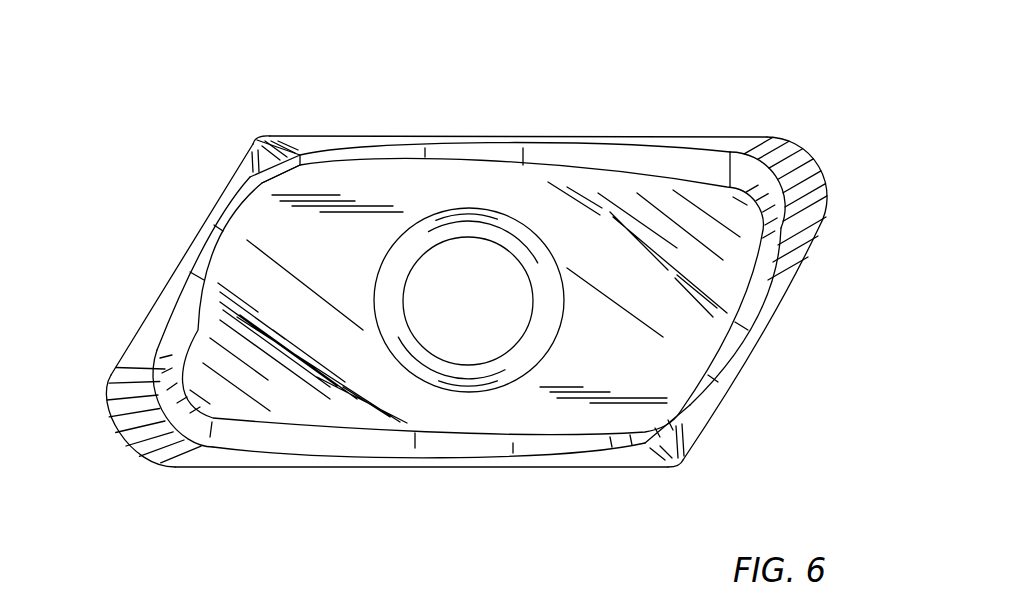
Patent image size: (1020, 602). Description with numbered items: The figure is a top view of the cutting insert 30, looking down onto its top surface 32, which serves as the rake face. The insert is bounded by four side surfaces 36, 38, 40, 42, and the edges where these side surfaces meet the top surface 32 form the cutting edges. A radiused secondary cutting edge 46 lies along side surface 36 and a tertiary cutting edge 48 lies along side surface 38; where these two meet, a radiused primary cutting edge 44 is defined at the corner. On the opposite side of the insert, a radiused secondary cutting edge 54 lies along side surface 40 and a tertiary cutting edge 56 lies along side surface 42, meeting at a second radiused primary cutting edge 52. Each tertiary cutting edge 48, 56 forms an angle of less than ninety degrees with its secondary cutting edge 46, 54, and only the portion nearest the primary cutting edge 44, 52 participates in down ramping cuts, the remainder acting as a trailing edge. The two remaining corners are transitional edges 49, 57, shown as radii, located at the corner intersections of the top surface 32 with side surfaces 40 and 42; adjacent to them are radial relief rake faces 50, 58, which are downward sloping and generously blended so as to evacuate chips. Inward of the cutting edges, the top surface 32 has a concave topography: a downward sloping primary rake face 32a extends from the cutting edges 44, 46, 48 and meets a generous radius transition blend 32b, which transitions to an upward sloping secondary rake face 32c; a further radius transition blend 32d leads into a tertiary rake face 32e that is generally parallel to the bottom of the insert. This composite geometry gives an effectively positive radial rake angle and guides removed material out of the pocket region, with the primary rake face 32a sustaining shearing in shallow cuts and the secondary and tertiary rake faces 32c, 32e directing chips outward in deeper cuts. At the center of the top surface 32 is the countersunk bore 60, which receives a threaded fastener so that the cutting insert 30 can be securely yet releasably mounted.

The cutting insert 30 is at (803, 108).
The top surface 32 is at (418, 183).
The primary rake face 32a is at (174, 292).
The radius transition blend 32b is at (368, 430).
The secondary rake face 32c is at (258, 352).
The radius transition blend 32d is at (452, 413).
The tertiary rake face 32e is at (572, 366).
The side surface 36 is at (447, 472).
The side surface 38 is at (757, 371).
The side surface 40 is at (626, 112).
The side surface 42 is at (150, 265).
The radiused primary cutting edge 44 is at (112, 401).
The radiused secondary cutting edge 46 is at (370, 473).
The tertiary cutting edge 48 is at (186, 248).
The transitional edge 49 is at (259, 132).
The radial relief rake face 50 is at (268, 147).
The radiused primary cutting edge 52 is at (828, 183).
The radiused secondary cutting edge 54 is at (518, 133).
The tertiary cutting edge 56 is at (785, 301).
The transitional edge 57 is at (684, 468).
The radial relief rake face 58 is at (672, 450).
The countersunk bore 60 is at (390, 300).